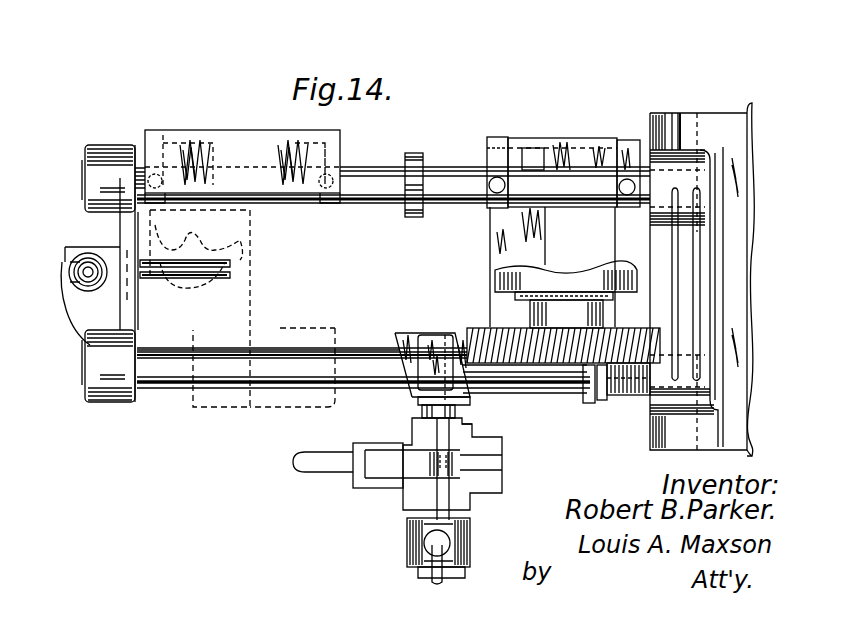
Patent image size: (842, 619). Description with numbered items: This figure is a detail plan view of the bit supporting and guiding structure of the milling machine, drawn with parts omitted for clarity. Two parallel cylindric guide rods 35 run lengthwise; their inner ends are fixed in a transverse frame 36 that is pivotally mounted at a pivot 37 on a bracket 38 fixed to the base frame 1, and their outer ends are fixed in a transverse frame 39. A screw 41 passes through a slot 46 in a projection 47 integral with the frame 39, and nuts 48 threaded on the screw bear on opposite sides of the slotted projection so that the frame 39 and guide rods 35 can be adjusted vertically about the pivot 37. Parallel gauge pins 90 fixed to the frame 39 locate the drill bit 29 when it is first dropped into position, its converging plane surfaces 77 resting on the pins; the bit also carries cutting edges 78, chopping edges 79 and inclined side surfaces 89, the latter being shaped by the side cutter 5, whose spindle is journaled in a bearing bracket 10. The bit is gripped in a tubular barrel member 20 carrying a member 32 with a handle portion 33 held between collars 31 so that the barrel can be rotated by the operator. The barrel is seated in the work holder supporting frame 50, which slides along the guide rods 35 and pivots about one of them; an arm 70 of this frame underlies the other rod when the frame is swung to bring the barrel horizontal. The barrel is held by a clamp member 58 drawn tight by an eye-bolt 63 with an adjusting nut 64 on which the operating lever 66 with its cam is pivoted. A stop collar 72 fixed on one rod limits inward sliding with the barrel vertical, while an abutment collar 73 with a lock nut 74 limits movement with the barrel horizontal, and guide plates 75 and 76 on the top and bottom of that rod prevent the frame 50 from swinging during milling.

The base frame 1 is at (757, 215).
The side cutter 5 is at (502, 327).
The bearing bracket 10 is at (577, 277).
The tubular barrel member 20 is at (460, 576).
The drill bit 29 is at (408, 357).
The collars 31 is at (407, 560).
The member 32 is at (468, 528).
The handle portion 33 is at (413, 575).
The guide rods 35 is at (183, 368).
The transverse frame 36 is at (660, 162).
The pivot 37 is at (683, 113).
The bracket 38 is at (728, 123).
The transverse frame 39 is at (93, 358).
The screw 41 is at (86, 262).
The slot 46 is at (63, 292).
The projection 47 is at (63, 292).
The nuts 48 is at (79, 262).
The work holder supporting frame 50 is at (493, 405).
The clamp member 58 is at (415, 440).
The eye-bolt 63 is at (437, 452).
The adjusting nut 64 is at (380, 467).
The operating lever 66 is at (310, 463).
The arm 70 is at (540, 230).
The stop collar 72 is at (413, 153).
The abutment collar 73 is at (588, 403).
The lock nut 74 is at (605, 397).
The guide plate 75 is at (240, 132).
The guide plate 76 is at (502, 138).
The converging plane surfaces 77 is at (460, 337).
The cutting edges 78 is at (420, 334).
The chopping edges 79 is at (436, 333).
The inclined side surfaces 89 is at (410, 353).
The gauge pins 90 is at (228, 278).